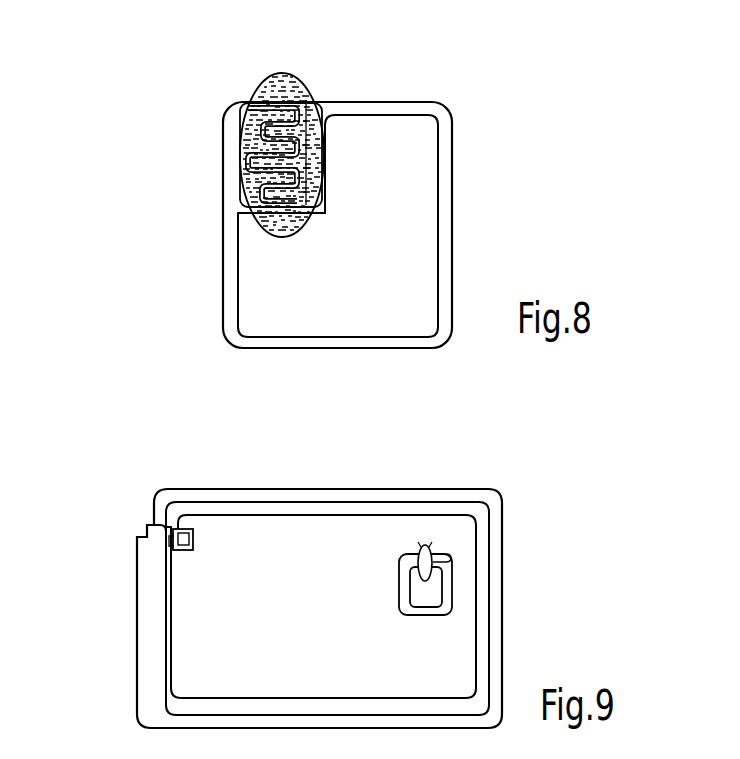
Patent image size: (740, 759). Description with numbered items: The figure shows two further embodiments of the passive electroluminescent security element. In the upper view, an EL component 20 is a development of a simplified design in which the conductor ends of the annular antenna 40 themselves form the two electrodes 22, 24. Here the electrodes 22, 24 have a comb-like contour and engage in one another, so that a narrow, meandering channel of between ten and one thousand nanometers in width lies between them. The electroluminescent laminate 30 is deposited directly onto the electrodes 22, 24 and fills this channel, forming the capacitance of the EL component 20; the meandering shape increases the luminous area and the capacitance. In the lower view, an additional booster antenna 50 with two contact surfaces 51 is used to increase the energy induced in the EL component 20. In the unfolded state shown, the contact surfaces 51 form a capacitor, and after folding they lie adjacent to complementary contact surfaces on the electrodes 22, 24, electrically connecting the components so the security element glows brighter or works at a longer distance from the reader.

In FIG. 8, the EL component 20 is at (281, 126).
In FIG. 9, the EL component 20 is at (485, 541).
In FIG. 8, the electrode 22 is at (270, 92).
In FIG. 9, the electrode 22 is at (446, 602).
In FIG. 8, the electrode 24 is at (316, 104).
In FIG. 9, the electrode 24 is at (430, 546).
In FIG. 8, the electroluminescent laminate 30 is at (298, 88).
In FIG. 9, the electroluminescent laminate 30 is at (420, 547).
In FIG. 8, the annular antenna 40 is at (452, 225).
In FIG. 9, the booster antenna 50 is at (248, 488).
In FIG. 9, the contact surfaces 51 is at (181, 552).